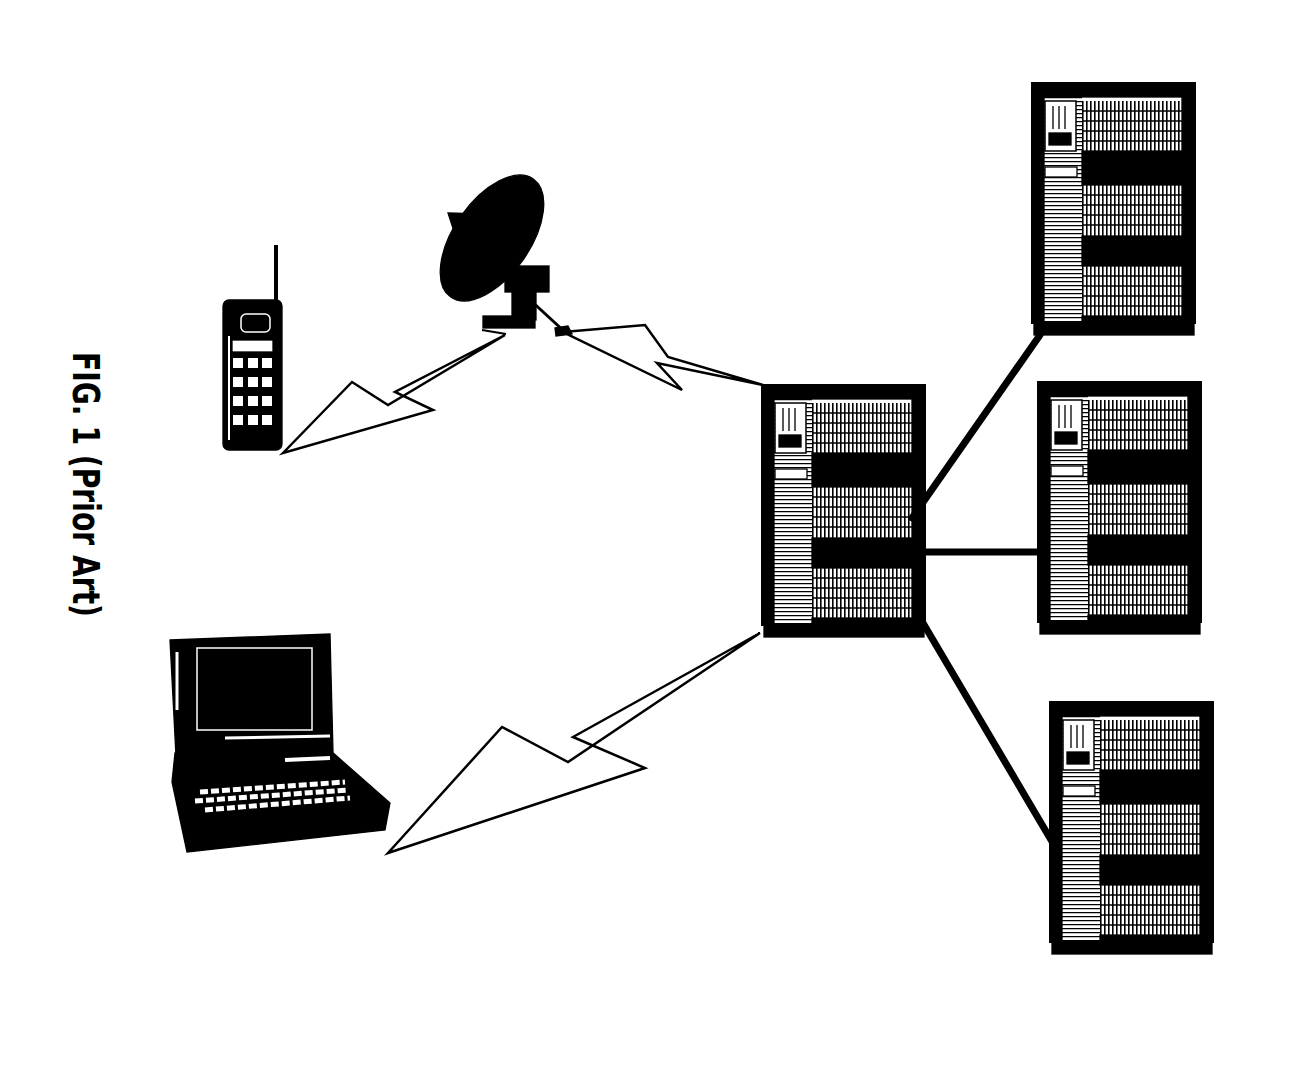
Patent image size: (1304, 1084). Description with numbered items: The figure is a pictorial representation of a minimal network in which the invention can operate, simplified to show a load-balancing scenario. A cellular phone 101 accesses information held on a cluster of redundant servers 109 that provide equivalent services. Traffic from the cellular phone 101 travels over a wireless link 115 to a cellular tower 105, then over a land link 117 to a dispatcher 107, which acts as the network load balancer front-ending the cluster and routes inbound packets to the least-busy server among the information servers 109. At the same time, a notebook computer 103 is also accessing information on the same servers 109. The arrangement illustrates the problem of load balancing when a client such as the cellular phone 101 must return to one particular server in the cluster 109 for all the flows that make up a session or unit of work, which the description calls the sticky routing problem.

The cellular phone 101 is at (252, 370).
The notebook computer 103 is at (280, 766).
The cellular tower 105 is at (496, 265).
The dispatcher 107 is at (843, 489).
The redundant servers 109 is at (1150, 518).
The wireless link 115 is at (394, 399).
The land link 117 is at (663, 380).